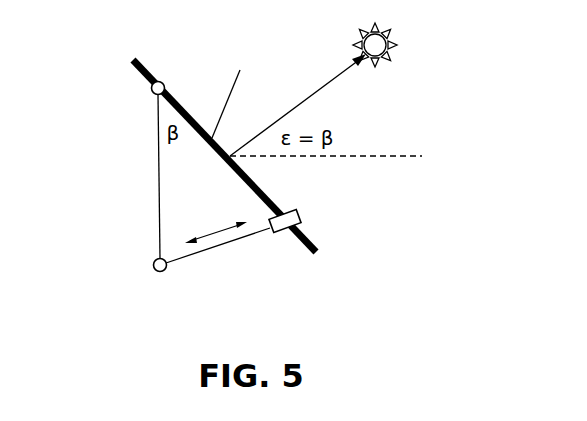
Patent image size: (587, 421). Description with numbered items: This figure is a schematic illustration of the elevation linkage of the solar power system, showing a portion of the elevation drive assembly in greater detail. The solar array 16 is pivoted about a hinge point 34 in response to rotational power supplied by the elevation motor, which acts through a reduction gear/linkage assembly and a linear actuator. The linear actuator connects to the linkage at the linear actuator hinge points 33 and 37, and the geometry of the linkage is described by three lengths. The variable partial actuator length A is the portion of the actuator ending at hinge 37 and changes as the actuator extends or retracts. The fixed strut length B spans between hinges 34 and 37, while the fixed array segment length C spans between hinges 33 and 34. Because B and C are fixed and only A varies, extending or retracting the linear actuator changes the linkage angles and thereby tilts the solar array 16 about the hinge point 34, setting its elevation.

The solar array 16 is at (136, 70).
The hinge point 34 is at (162, 83).
The linear actuator hinge point 33 is at (152, 268).
The linear actuator hinge point 37 is at (290, 232).
The variable partial actuator length A is at (213, 253).
The fixed strut length B is at (157, 175).
The fixed array segment length C is at (232, 91).